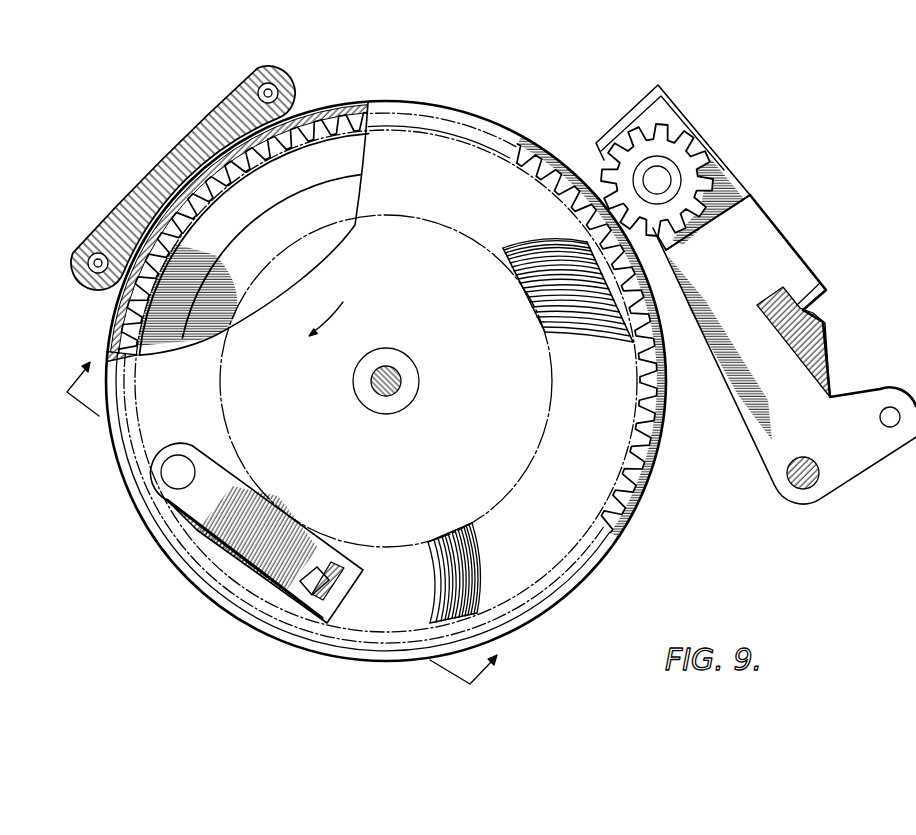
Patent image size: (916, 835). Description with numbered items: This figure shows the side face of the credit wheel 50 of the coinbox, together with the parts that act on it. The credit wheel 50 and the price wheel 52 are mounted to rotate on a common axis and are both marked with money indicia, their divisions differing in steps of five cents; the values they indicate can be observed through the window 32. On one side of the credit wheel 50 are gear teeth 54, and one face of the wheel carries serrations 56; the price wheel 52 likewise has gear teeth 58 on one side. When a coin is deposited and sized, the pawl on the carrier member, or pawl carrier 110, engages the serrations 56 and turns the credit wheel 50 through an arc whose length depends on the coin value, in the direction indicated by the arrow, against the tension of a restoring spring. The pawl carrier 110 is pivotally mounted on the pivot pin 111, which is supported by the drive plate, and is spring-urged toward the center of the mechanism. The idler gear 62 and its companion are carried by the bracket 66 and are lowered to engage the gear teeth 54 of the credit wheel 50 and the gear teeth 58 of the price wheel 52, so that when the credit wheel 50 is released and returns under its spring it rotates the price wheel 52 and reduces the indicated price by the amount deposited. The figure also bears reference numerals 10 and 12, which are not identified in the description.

The clutch assembly 10 is at (269, 535).
The stop block 12 is at (332, 565).
The window 32 is at (170, 176).
The credit wheel 50 is at (645, 504).
The price wheel 52 is at (344, 128).
The gear teeth 54 is at (648, 419).
The serrations 56 is at (540, 309).
The gear teeth 58 is at (283, 128).
The idler gear 62 is at (706, 160).
The bracket 66 is at (778, 240).
The pawl carrier 110 is at (247, 548).
The pivot pin 111 is at (168, 473).